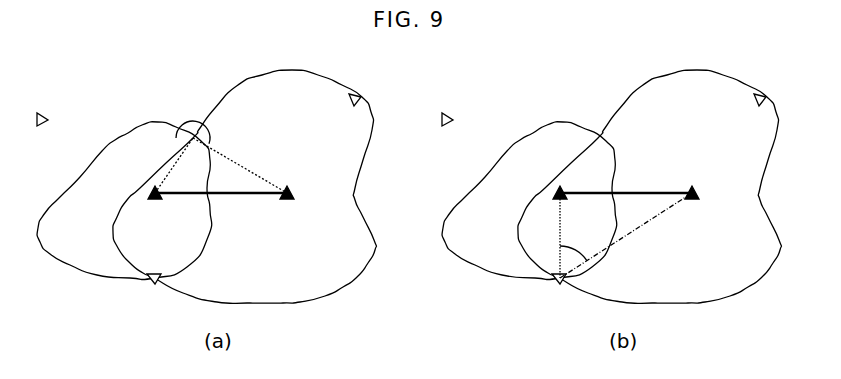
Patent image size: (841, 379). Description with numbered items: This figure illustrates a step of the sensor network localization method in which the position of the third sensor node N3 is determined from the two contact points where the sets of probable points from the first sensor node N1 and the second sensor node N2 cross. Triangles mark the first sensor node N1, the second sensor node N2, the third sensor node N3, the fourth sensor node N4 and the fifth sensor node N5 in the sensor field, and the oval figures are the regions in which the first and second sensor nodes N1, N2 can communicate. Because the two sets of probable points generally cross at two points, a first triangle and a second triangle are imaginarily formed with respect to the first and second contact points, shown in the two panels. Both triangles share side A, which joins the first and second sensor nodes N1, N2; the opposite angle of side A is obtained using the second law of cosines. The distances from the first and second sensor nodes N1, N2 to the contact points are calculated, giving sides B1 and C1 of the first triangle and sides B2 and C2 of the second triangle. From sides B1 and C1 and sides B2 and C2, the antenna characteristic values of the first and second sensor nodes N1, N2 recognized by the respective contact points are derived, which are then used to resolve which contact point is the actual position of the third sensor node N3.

The first sensor node N1 is at (365, 197).
The second sensor node N2 is at (497, 198).
The third sensor node N3 is at (362, 285).
The fourth sensor node N4 is at (565, 107).
The fifth sensor node N5 is at (254, 121).
The side A is at (423, 183).
The side B1 of the first triangle B1 is at (549, 235).
The side B2 of the second triangle B2 is at (171, 165).
The side C1 of the first triangle C1 is at (626, 235).
The side C2 of the second triangle C2 is at (240, 165).